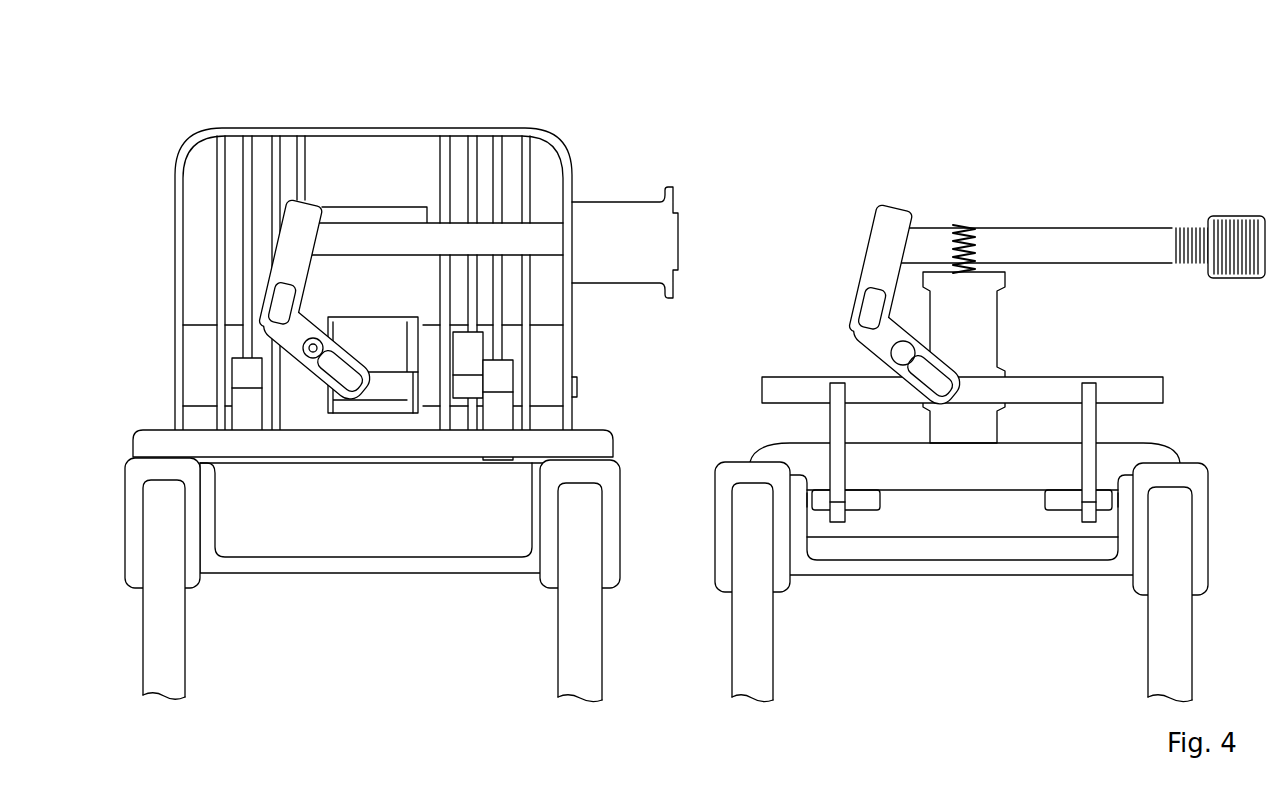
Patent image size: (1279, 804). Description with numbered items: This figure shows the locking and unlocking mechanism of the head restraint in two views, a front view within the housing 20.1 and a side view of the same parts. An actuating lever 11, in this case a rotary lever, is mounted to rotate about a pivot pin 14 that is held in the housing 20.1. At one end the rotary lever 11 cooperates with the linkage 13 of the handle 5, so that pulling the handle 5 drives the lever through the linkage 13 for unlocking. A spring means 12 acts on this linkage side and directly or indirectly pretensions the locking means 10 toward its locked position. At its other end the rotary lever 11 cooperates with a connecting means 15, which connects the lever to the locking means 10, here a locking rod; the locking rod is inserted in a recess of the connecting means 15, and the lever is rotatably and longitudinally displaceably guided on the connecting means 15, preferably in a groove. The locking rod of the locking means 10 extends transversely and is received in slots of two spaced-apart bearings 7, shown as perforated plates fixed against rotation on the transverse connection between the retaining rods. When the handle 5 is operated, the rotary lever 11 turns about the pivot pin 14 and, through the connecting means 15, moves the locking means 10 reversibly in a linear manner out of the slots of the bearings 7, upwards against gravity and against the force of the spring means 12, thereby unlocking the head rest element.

The handle 5 is at (612, 241).
The bearings 7 is at (833, 425).
The locking means 10 is at (1125, 392).
The actuating lever 11 is at (287, 258).
The spring means 12 is at (965, 228).
The linkage 13 is at (485, 235).
The pivot pin 14 is at (303, 348).
The connecting means 15 is at (397, 388).
The housing 20.1 is at (233, 167).